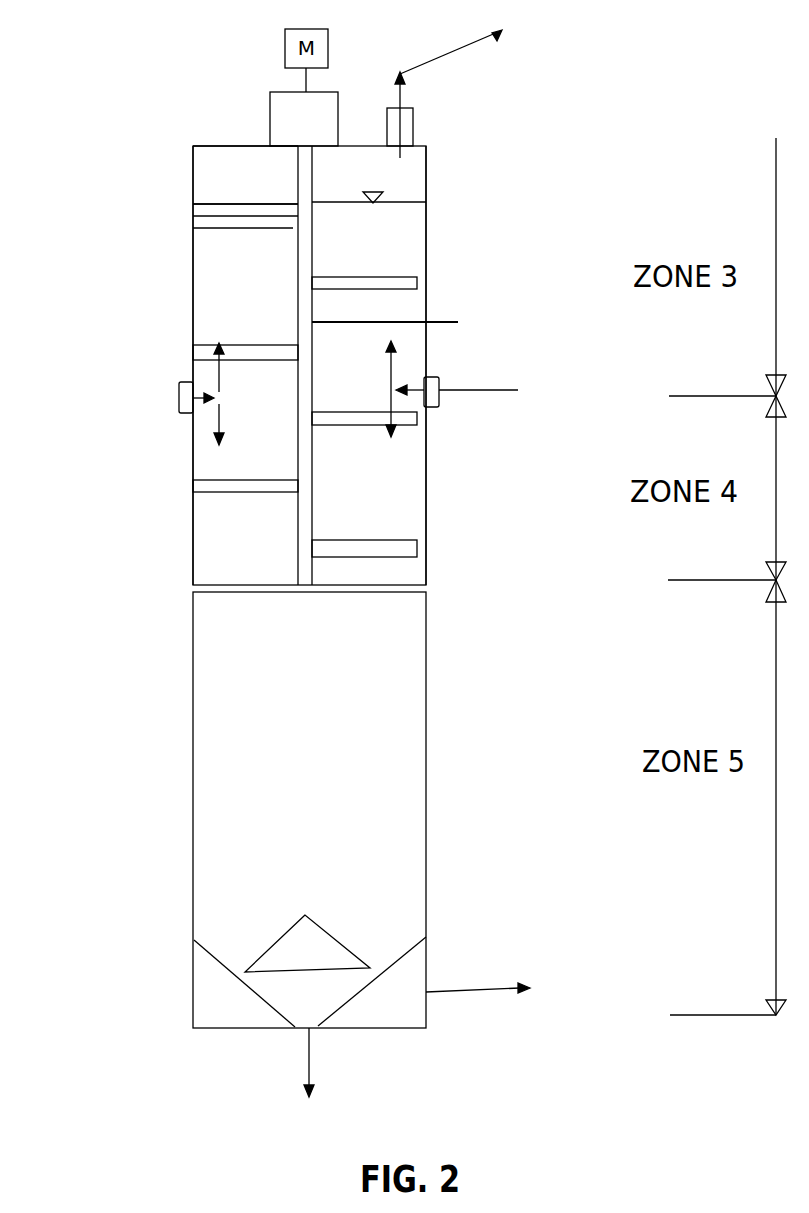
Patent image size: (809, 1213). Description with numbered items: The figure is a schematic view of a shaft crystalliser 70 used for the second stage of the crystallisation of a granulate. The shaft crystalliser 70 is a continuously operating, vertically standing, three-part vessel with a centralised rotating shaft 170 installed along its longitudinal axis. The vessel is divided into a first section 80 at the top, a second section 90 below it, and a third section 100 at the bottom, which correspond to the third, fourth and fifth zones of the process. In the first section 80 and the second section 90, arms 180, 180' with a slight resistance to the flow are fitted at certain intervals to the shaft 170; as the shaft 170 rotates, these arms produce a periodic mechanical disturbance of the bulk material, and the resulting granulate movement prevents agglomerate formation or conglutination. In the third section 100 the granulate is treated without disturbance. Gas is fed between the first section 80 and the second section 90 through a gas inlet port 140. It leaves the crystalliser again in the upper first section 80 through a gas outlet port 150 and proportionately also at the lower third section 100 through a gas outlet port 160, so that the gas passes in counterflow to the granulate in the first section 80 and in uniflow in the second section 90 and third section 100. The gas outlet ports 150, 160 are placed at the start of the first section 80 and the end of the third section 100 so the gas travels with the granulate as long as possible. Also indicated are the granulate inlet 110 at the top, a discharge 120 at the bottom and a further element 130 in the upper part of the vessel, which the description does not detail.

The shaft crystalliser 70 is at (193, 320).
The first section 80 is at (362, 252).
The second section 90 is at (376, 490).
The third section 100 is at (318, 754).
The influent inlet 110 is at (248, 180).
The sludge outlet 120 is at (338, 1066).
The screen / baffle 130 is at (412, 325).
The gas inlet port 140 is at (467, 392).
The gas outlet port 150 is at (413, 73).
The gas outlet port 160 is at (476, 990).
The rotating shaft 170 is at (302, 270).
The arm 180 is at (411, 284).
The arm 180' is at (199, 486).